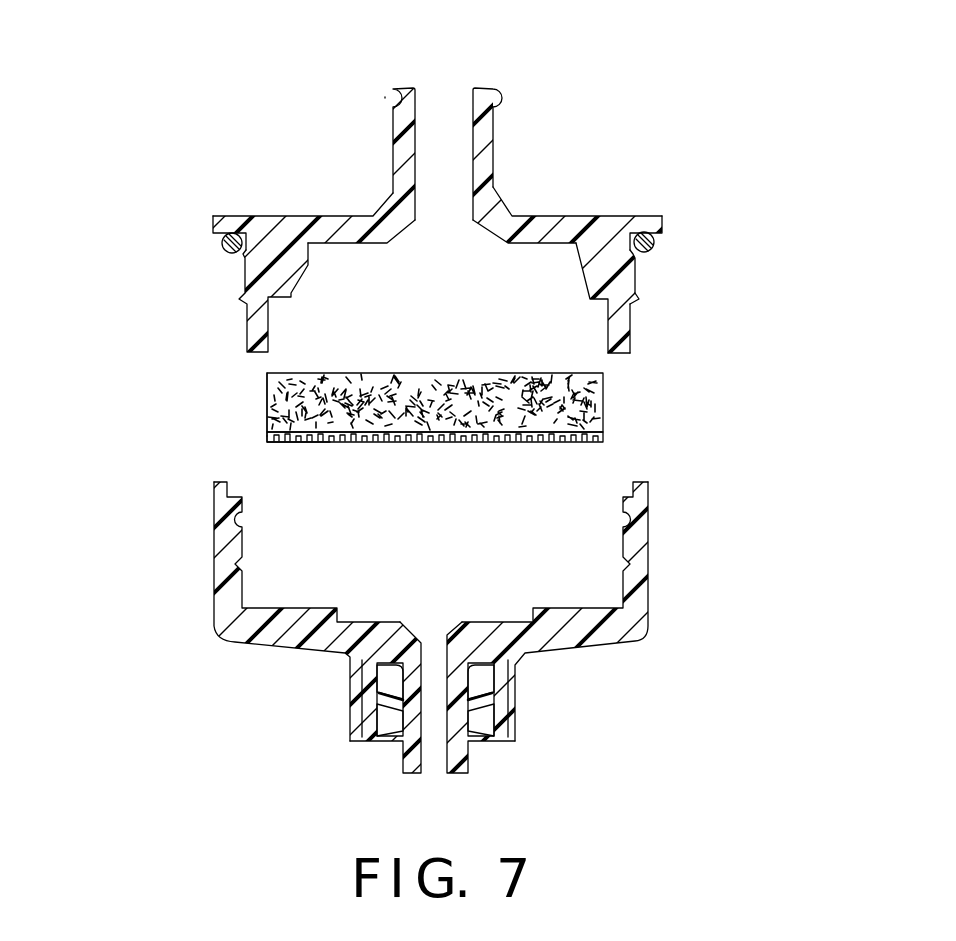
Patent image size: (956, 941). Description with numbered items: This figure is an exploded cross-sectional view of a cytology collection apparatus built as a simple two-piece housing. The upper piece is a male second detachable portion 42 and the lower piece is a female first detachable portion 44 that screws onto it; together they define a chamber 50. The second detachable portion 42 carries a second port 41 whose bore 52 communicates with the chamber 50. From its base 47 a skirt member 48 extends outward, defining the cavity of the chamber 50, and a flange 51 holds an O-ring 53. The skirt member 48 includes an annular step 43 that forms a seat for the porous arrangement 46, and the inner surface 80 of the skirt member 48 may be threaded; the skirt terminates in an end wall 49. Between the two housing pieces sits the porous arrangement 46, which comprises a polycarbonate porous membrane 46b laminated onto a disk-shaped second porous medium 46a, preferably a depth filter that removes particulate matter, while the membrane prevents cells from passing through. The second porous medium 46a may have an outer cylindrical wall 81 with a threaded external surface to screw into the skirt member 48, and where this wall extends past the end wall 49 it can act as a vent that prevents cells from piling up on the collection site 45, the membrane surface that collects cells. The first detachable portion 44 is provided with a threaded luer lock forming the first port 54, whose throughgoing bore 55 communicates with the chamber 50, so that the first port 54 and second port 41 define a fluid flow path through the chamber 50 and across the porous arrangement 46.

The second port 41 is at (493, 146).
The second detachable portion 42 is at (655, 165).
The annular step 43 is at (638, 301).
The first detachable portion 44 is at (647, 657).
The collection site 45 is at (603, 440).
The porous arrangement 46 is at (108, 364).
The second porous medium 46a is at (603, 396).
The porous membrane 46b is at (266, 437).
The base 47 is at (549, 216).
The skirt member 48 is at (630, 330).
The end wall 49 is at (630, 353).
The chamber 50 is at (460, 292).
The flange 51 is at (213, 231).
The bore 52 is at (440, 107).
The O-ring 53 is at (655, 245).
The first port 54 is at (515, 695).
The throughgoing bore 55 is at (428, 775).
The inner surface 80 is at (268, 322).
The outer cylindrical wall 81 is at (267, 408).